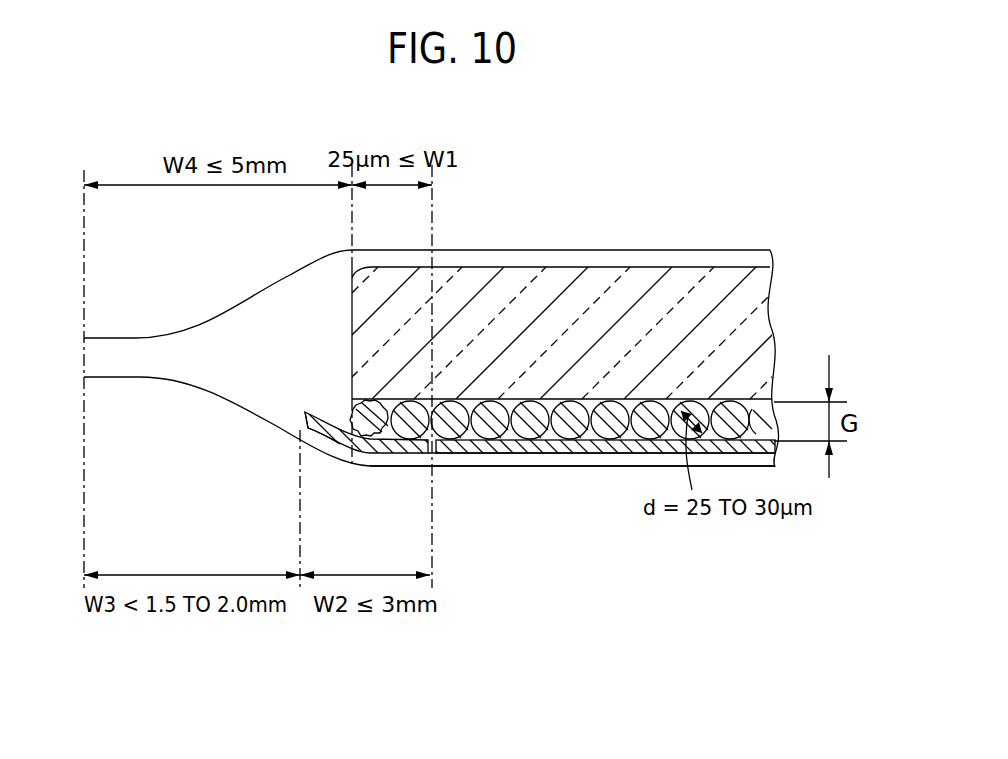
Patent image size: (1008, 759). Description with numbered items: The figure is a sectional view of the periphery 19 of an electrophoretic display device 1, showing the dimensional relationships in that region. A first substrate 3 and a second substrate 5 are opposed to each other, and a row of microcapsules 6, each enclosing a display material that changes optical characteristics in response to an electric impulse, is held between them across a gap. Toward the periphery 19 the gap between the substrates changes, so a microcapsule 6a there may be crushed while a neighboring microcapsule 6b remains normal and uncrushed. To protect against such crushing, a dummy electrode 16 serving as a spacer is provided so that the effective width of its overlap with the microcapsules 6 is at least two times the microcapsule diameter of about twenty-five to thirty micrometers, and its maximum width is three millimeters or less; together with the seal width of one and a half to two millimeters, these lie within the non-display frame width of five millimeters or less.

The electrophoretic display device 1 is at (626, 186).
The first substrate 3 is at (606, 455).
The second substrate 5 is at (751, 335).
The microcapsules 6 is at (528, 432).
The crushed microcapsule 6a is at (366, 433).
The uncrushed microcapsule 6b is at (407, 432).
The dummy electrode 16 is at (336, 437).
The periphery 19 is at (302, 389).